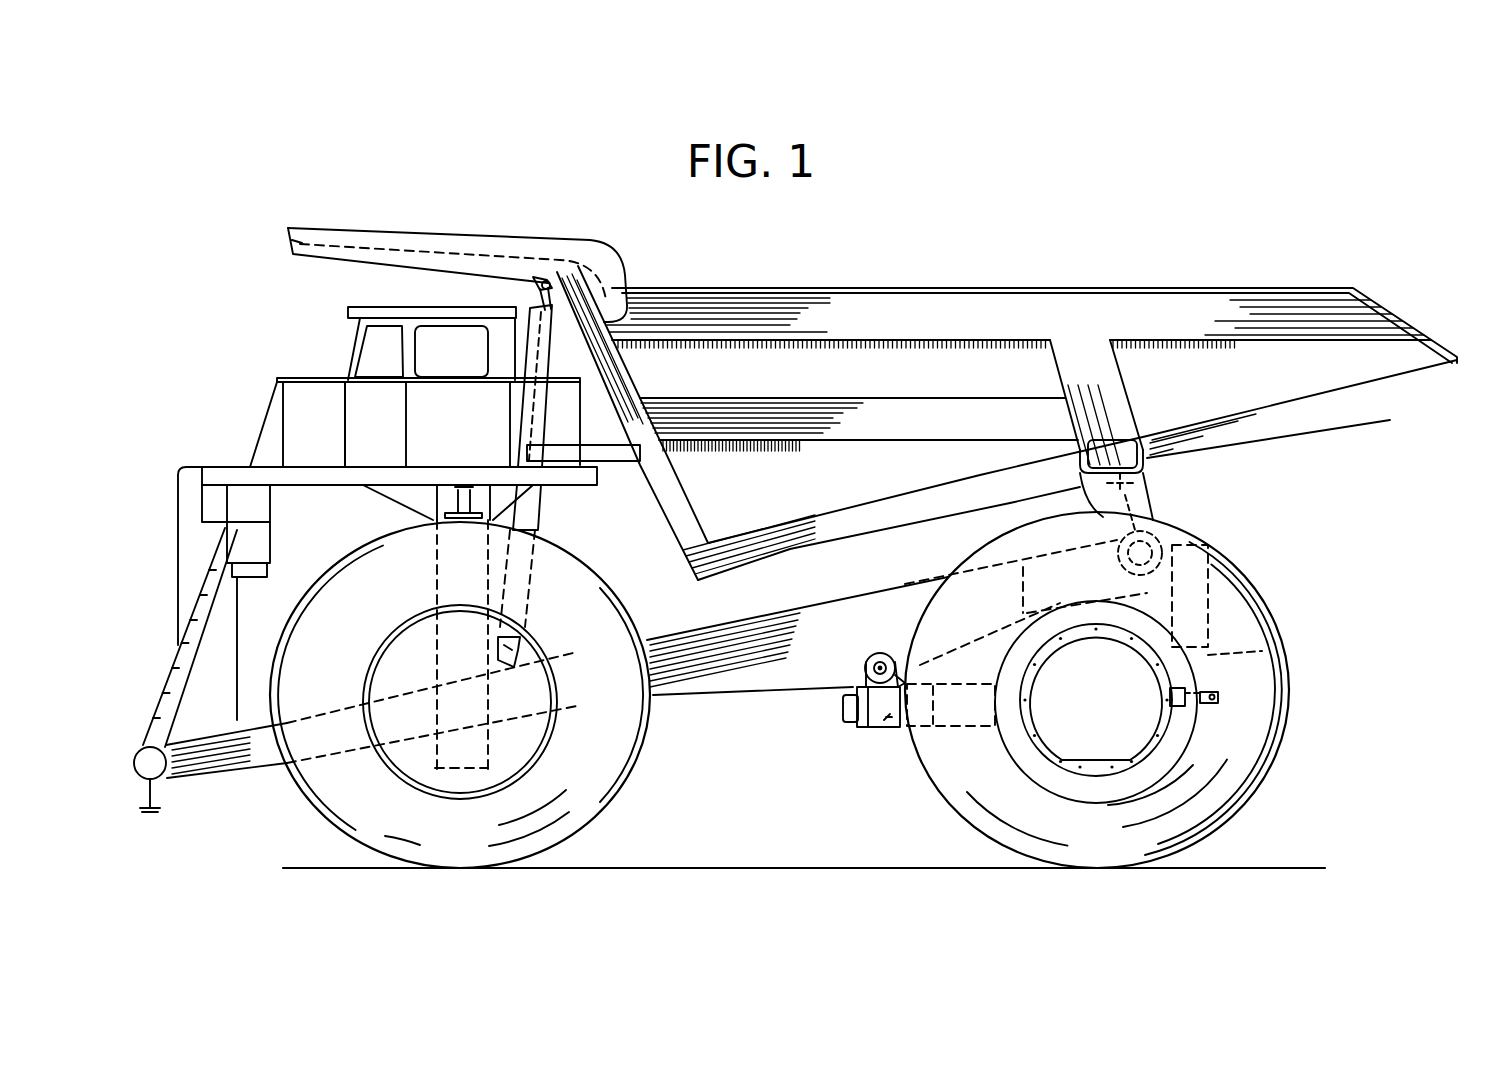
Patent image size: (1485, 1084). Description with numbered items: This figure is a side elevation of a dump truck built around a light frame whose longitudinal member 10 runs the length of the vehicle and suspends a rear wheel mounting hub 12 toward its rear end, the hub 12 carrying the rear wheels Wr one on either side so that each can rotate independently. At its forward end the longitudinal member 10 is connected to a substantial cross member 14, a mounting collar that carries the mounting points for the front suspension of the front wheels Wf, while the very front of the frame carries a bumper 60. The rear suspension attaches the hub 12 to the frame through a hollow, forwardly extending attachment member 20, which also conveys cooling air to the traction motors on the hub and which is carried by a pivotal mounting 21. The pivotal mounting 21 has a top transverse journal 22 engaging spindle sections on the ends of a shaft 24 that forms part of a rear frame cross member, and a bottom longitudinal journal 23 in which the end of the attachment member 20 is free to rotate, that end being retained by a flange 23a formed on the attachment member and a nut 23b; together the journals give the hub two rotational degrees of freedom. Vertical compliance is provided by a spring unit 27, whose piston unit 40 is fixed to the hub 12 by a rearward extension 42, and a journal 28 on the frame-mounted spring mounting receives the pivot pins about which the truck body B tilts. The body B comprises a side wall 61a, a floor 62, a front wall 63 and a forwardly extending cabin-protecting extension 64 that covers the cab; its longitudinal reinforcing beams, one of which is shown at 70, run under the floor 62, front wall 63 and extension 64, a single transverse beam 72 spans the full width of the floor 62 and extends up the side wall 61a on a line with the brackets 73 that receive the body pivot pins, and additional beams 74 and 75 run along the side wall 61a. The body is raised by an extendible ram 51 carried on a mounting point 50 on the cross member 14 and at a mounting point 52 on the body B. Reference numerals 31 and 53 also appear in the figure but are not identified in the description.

The truck body B is at (1007, 389).
The longitudinal member 10 is at (697, 658).
The rear wheel mounting hub 12 is at (1085, 742).
The cross member 14 is at (443, 497).
The attachment member 20 is at (968, 735).
The pivotal mounting 21 is at (857, 670).
The top transverse journal 22 is at (878, 655).
The bottom longitudinal journal 23 is at (870, 728).
The flange 23a is at (900, 748).
The nut 23b is at (843, 718).
The shaft 24 is at (893, 655).
The spring unit 27 is at (1212, 590).
The journal 28 is at (1122, 566).
The rear wheel inner hub 31 is at (1133, 652).
The piston unit 40 is at (1277, 647).
The rearward extension 42 is at (1263, 697).
The mounting point 50 is at (520, 655).
The extendible ram 51 is at (540, 510).
The mounting point 52 is at (540, 284).
The body pivot pin 53 is at (1162, 540).
The bumper 60 is at (147, 760).
The side wall 61a is at (913, 383).
The floor 62 is at (1365, 378).
The front wall 63 is at (677, 513).
The cabin-protecting extension 64 is at (475, 232).
The reinforcing beam 70 is at (857, 527).
The transverse reinforcing beam 72 is at (1118, 393).
The bracket 73 is at (1140, 492).
The additional beam 74 is at (810, 313).
The additional beam 75 is at (978, 420).
The front wheel Wf is at (600, 763).
The rear wheel Wr is at (1228, 780).